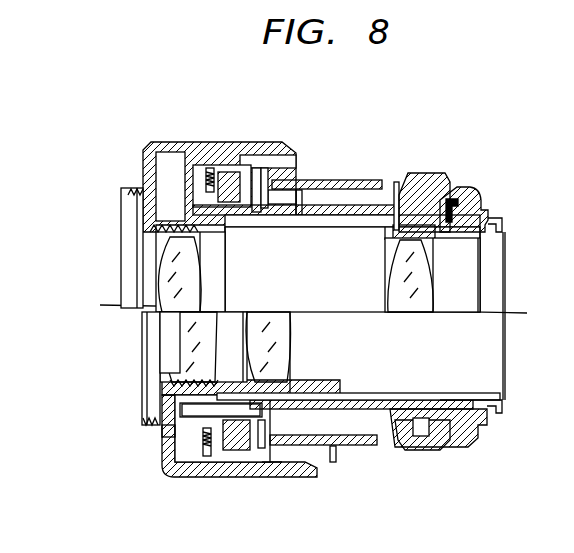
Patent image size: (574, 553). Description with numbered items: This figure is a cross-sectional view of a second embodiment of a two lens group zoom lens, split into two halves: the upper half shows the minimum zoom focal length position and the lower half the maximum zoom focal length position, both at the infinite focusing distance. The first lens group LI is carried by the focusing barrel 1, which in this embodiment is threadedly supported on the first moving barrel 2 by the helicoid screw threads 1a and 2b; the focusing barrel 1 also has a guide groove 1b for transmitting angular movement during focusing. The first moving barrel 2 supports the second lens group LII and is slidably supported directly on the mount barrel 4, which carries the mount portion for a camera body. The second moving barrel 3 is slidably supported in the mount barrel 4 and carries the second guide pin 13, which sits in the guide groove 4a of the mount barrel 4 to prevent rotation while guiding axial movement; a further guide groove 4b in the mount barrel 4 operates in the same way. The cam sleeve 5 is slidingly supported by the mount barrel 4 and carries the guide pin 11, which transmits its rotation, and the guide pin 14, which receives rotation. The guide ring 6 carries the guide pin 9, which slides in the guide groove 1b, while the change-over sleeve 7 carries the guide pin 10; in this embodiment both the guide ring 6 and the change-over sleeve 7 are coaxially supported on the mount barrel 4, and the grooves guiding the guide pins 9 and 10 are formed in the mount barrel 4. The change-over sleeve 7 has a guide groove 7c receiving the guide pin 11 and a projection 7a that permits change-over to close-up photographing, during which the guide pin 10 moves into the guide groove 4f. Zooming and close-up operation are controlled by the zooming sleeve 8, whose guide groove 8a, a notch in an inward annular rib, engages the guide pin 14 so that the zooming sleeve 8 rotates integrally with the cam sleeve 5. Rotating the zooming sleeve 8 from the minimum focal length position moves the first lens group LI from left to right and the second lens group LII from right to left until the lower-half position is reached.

The focusing barrel 1 is at (160, 142).
The helicoid screw thread 1a is at (127, 222).
The guide groove 1b is at (184, 152).
The first moving barrel 2 is at (142, 185).
The helicoid screw thread 2b is at (161, 368).
The second moving barrel 3 is at (498, 216).
The mount barrel 4 is at (472, 192).
The guide groove 4a is at (397, 182).
The guide groove 4b is at (162, 433).
The guide groove 4f is at (275, 477).
The cam sleeve 5 is at (370, 180).
The guide ring 6 is at (233, 168).
The change-over sleeve 7 is at (349, 180).
The projection 7a is at (183, 476).
The guide groove 7c is at (278, 168).
The zooming sleeve 8 is at (427, 173).
The guide groove 8a is at (430, 450).
The guide pin 9 is at (213, 166).
The guide pin 10 is at (266, 176).
The guide pin 11 is at (303, 182).
The second guide pin 13 is at (452, 199).
The guide pin 14 is at (440, 450).
The first lens group LI is at (193, 280).
The second lens group LII is at (433, 272).